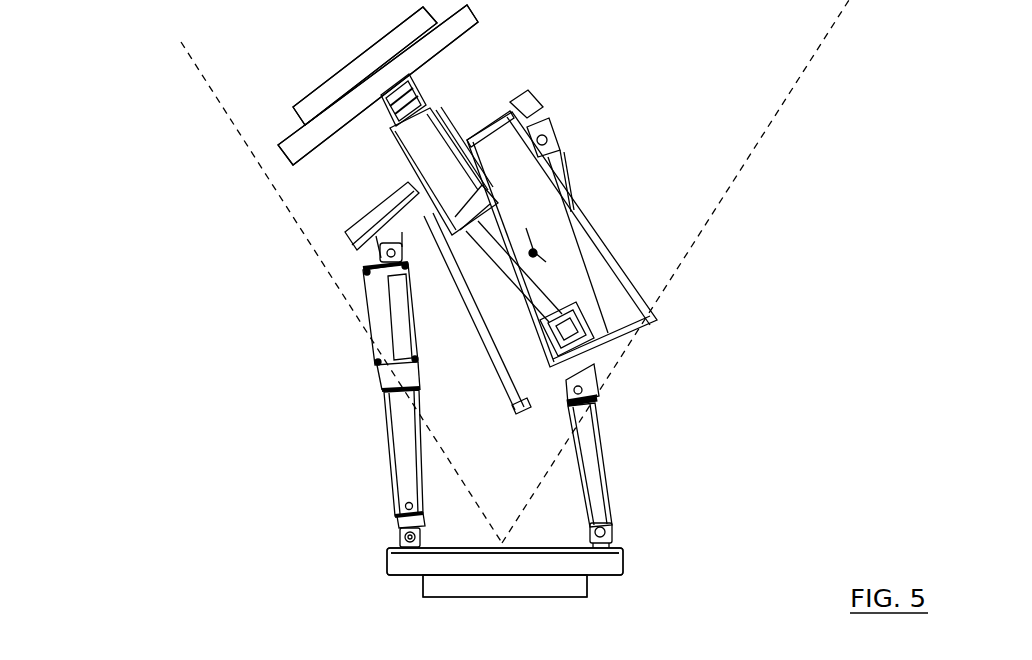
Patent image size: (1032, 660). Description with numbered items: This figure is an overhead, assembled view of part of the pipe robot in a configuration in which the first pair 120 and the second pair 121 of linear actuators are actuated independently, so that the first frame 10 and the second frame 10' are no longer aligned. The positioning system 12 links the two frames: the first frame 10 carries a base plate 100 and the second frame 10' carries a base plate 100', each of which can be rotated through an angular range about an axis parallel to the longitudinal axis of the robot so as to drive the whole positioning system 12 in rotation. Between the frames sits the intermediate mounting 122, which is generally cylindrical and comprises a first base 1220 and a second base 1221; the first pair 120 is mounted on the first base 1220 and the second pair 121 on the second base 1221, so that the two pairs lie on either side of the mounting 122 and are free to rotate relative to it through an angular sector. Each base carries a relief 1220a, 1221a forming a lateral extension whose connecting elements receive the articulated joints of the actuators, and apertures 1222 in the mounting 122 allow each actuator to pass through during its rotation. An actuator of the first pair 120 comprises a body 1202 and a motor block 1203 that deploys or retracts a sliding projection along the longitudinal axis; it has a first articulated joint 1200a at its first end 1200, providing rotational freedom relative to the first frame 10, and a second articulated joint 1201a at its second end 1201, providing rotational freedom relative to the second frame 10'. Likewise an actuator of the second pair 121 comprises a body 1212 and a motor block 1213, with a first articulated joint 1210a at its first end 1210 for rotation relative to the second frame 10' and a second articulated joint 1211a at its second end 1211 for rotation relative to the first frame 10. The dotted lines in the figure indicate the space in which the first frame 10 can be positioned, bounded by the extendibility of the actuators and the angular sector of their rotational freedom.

The second frame 10' is at (302, 82).
The base plate 100' is at (302, 82).
The first frame 10 is at (568, 579).
The base plate 100 is at (568, 579).
The positioning system 12 is at (547, 67).
The first pair of linear actuators 120 is at (110, 315).
The first end 1200 is at (395, 510).
The first articulated joint 1200a is at (402, 532).
The second end 1201 is at (372, 275).
The second articulated joint 1201a is at (379, 252).
The body 1202 is at (400, 440).
The motor block 1203 is at (376, 360).
The second pair of linear actuators 121 is at (110, 77).
The first end 1210 is at (392, 130).
The first articulated joint 1210a is at (384, 100).
The second end 1211 is at (537, 317).
The second articulated joint 1211a is at (567, 332).
The body 1212 is at (498, 238).
The motor block 1213 is at (438, 162).
The intermediate mounting 122 is at (785, 73).
The first base 1220 is at (491, 128).
The relief 1220a is at (525, 102).
The second base 1221 is at (637, 333).
The relief 1221a is at (606, 340).
The apertures 1222 is at (512, 213).